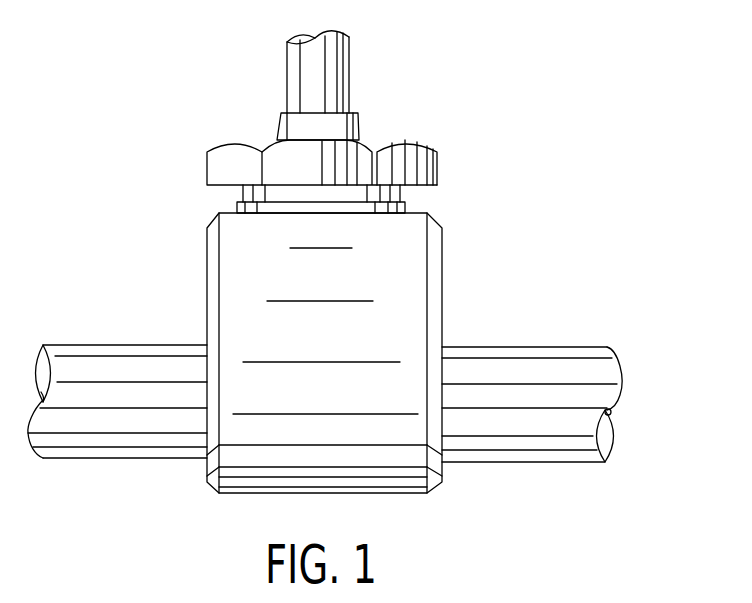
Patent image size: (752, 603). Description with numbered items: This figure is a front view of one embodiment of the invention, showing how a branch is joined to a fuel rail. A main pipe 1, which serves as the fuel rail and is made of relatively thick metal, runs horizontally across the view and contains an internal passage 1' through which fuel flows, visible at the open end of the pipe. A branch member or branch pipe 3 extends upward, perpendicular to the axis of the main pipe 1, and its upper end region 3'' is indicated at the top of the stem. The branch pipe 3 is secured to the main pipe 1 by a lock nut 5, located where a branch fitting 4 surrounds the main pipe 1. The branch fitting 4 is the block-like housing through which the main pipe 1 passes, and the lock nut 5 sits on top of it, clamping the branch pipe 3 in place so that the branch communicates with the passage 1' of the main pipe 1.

The main pipe 1 is at (325, 372).
The passage 1' is at (646, 432).
The branch pipe 3 is at (349, 85).
The stem tip 3'' is at (264, 34).
The branch fitting 4 is at (392, 478).
The lock nut 5 is at (417, 165).